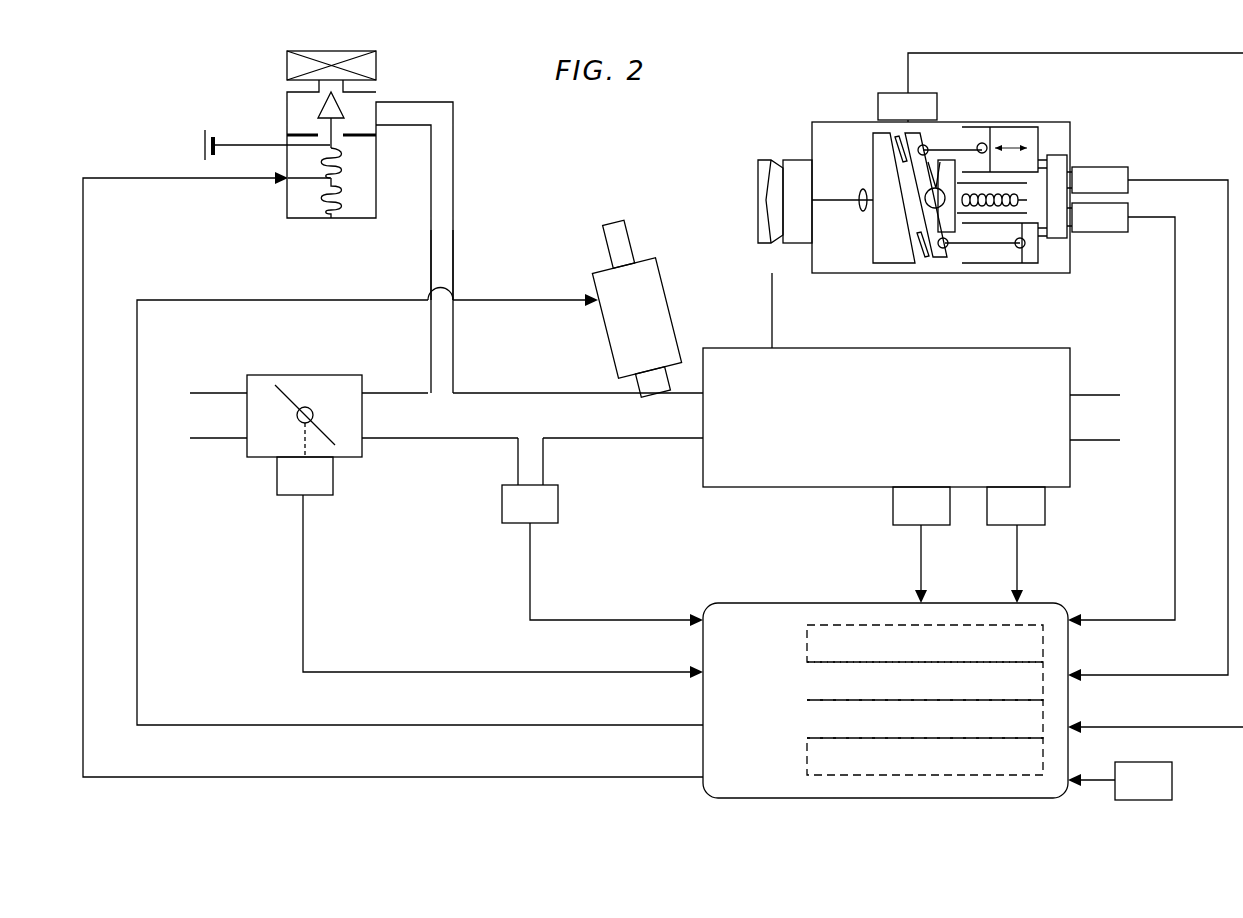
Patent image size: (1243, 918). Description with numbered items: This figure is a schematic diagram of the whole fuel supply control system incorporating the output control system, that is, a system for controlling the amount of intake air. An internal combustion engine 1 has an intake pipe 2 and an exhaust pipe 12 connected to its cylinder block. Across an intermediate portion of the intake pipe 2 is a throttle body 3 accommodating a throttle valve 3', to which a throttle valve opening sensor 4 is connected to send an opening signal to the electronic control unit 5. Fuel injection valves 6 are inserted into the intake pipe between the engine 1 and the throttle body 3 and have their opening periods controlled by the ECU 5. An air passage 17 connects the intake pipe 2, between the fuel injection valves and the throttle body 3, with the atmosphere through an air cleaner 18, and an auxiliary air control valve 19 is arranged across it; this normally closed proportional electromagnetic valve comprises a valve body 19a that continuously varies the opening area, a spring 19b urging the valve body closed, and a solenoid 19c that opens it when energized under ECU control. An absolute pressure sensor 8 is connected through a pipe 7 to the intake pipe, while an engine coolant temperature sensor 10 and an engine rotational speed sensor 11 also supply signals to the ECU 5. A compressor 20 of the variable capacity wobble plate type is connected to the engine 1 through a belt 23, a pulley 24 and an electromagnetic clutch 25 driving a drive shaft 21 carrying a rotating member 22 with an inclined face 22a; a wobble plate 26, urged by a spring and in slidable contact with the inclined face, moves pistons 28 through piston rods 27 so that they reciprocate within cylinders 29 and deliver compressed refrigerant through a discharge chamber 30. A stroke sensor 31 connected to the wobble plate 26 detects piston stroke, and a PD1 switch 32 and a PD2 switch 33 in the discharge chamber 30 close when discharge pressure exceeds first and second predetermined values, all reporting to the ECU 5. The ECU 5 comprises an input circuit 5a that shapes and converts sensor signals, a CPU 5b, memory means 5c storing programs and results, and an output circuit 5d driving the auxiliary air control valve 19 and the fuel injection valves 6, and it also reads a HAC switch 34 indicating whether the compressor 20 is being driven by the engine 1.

The internal combustion engine 1 is at (1062, 348).
The intake pipe 2 is at (544, 392).
The throttle body 3 is at (304, 394).
The throttle valve 3' is at (302, 394).
The throttle valve opening sensor 4 is at (333, 468).
The electronic control unit 5 is at (1066, 603).
The input circuit 5a is at (1043, 636).
The central processing unit 5b is at (1043, 672).
The memory means 5c is at (1043, 708).
The output circuit 5d is at (1043, 752).
The fuel injection valves 6 is at (597, 272).
The pipe 7 is at (543, 455).
The absolute pressure sensor 8 is at (558, 502).
The engine coolant temperature sensor 10 is at (944, 525).
The engine rotational speed sensor 11 is at (1045, 513).
The exhaust pipe 12 is at (1076, 395).
The air passage 17 is at (440, 222).
The air cleaner 18 is at (376, 66).
The auxiliary air control valve 19 is at (288, 94).
The valve body 19a is at (338, 106).
The spring 19b is at (345, 205).
The solenoid 19c is at (345, 166).
The compressor 20 is at (838, 273).
The drive shaft 21 is at (842, 200).
The rotating member 22 is at (878, 240).
The inclined face 22a is at (948, 234).
The belt 23 is at (772, 268).
The pulley 24 is at (762, 160).
The electromagnetic clutch 25 is at (797, 160).
The wobble plate 26 is at (978, 212).
The piston rods 27 is at (932, 148).
The pistons 28 is at (994, 128).
The cylinders 29 is at (1028, 128).
The discharge chamber 30 is at (1052, 162).
The stroke sensor 31 is at (878, 110).
The PD1 switch 32 is at (1100, 167).
The PD2 switch 33 is at (1098, 232).
The HAC switch 34 is at (1172, 781).